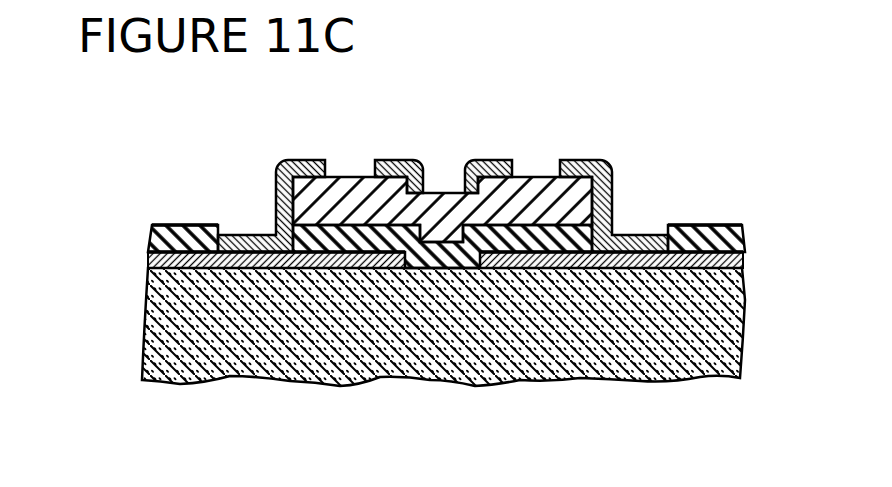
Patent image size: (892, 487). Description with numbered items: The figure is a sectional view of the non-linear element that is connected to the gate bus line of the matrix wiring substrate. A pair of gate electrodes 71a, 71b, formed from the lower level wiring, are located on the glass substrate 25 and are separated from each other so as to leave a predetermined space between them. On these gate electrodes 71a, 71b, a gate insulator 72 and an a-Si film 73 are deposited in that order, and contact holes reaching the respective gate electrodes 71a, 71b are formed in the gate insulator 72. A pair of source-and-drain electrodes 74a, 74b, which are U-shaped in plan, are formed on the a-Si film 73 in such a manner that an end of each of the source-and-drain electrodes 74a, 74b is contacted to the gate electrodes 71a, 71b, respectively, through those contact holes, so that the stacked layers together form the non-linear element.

The glass substrate 25 is at (160, 338).
The gate electrode 71a is at (150, 250).
The gate electrode 71b is at (745, 250).
The gate insulator 72 is at (418, 263).
The a-Si film 73 is at (582, 203).
The source-and-drain electrode 74a is at (305, 160).
The source-and-drain electrode 74b is at (392, 160).